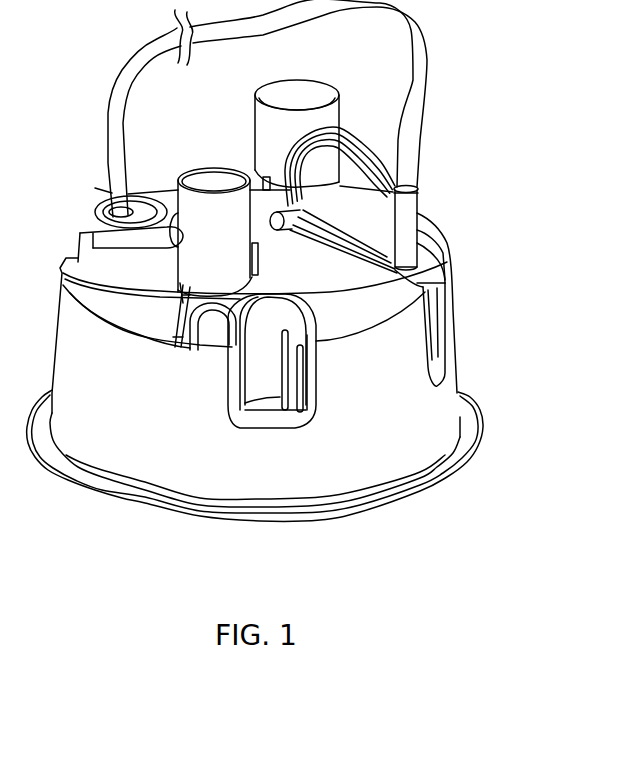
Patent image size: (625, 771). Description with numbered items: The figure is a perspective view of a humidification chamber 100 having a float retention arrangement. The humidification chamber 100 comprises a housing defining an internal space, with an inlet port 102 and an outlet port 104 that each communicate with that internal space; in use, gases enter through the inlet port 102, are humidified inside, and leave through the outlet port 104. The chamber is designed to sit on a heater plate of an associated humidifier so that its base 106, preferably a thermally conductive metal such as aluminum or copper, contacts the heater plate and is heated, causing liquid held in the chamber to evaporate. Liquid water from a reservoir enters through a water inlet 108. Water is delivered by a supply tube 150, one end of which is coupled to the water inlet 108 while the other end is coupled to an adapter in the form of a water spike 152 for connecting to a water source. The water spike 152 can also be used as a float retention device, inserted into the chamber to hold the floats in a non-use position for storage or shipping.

The humidification chamber 100 is at (458, 198).
The inlet port 102 is at (220, 168).
The outlet port 104 is at (314, 80).
The base 106 is at (227, 473).
The water inlet 108 is at (107, 200).
The supply tube 150 is at (420, 22).
The water spike 152 is at (408, 241).